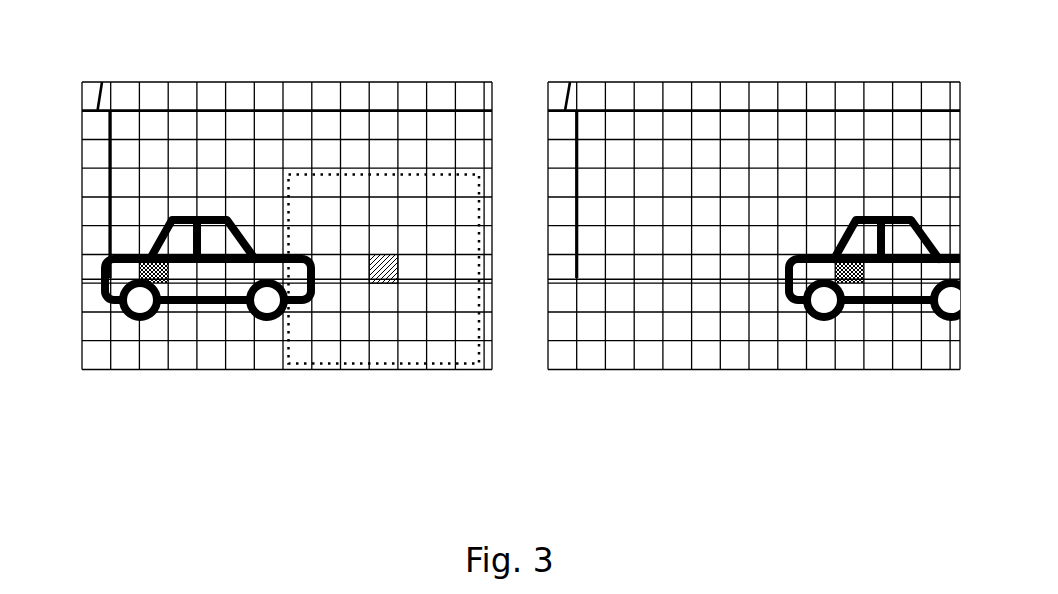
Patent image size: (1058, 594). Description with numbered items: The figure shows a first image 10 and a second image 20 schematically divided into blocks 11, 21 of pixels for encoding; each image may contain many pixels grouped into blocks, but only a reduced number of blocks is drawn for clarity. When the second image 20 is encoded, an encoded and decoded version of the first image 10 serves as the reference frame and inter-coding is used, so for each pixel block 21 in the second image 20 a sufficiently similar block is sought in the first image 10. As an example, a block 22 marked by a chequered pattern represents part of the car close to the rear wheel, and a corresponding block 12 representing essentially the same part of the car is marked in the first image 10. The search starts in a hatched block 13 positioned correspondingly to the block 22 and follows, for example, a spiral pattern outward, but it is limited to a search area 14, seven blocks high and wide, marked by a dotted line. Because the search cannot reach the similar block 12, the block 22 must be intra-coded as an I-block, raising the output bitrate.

The first image 10 is at (88, 82).
The block of pixels 11 is at (410, 95).
The corresponding block 12 is at (150, 272).
The start block 13 is at (386, 274).
The search area 14 is at (317, 364).
The second image 20 is at (555, 82).
The pixel block 21 is at (877, 95).
The block to be encoded 22 is at (858, 280).